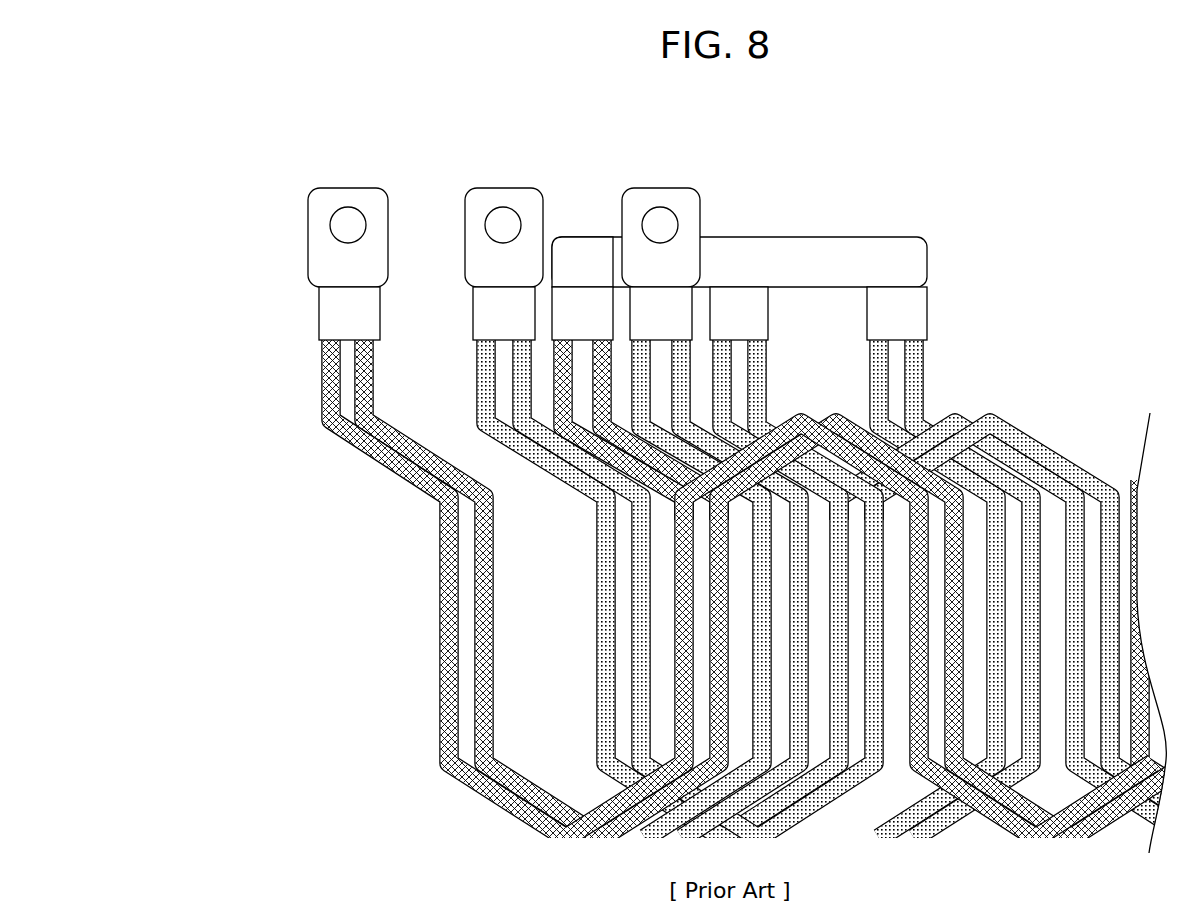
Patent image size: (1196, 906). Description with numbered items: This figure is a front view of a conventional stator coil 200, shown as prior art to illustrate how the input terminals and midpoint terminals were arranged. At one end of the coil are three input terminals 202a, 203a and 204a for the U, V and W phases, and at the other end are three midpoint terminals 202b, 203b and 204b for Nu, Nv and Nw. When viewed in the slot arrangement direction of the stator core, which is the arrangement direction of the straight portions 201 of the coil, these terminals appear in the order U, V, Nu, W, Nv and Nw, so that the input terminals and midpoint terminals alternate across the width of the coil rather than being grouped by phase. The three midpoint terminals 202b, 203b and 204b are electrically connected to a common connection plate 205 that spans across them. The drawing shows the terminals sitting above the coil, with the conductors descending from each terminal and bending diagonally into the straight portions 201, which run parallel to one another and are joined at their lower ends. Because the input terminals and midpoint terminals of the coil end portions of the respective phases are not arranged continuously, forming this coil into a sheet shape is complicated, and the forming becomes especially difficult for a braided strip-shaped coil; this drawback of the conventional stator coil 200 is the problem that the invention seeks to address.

The stator coil 200 is at (683, 596).
The straight portions of the coil 201 is at (415, 680).
The input terminal 202a is at (330, 187).
The input terminal 203a is at (502, 187).
The input terminal 204a is at (657, 187).
The midpoint terminal 202b is at (585, 287).
The midpoint terminal 203b is at (740, 287).
The midpoint terminal 204b is at (893, 287).
The common connection plate 205 is at (930, 258).